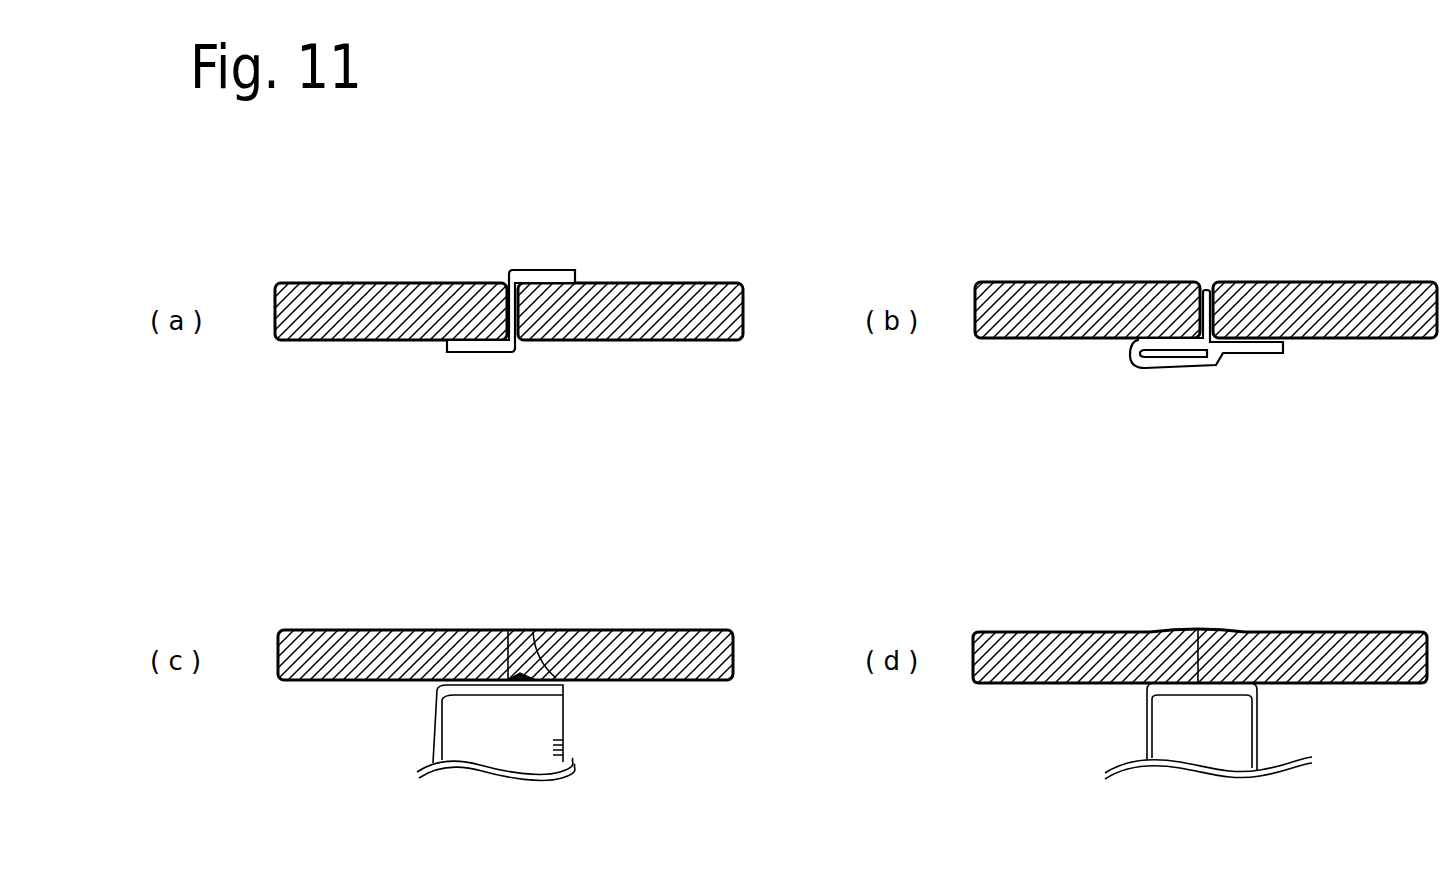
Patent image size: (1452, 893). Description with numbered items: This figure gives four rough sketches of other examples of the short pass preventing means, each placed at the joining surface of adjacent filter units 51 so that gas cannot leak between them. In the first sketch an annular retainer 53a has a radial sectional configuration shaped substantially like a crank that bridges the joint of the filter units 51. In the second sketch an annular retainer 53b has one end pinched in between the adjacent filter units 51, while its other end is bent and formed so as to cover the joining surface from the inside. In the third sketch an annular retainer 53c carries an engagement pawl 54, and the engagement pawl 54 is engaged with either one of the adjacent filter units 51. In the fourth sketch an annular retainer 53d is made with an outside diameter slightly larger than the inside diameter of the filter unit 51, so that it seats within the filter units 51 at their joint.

The filter unit 51 is at (423, 290).
The annular retainer 53a is at (547, 273).
The annular retainer 53b is at (1180, 357).
The annular retainer 53c is at (557, 708).
The annular retainer 53d is at (1165, 717).
The engagement pawl 54 is at (533, 632).